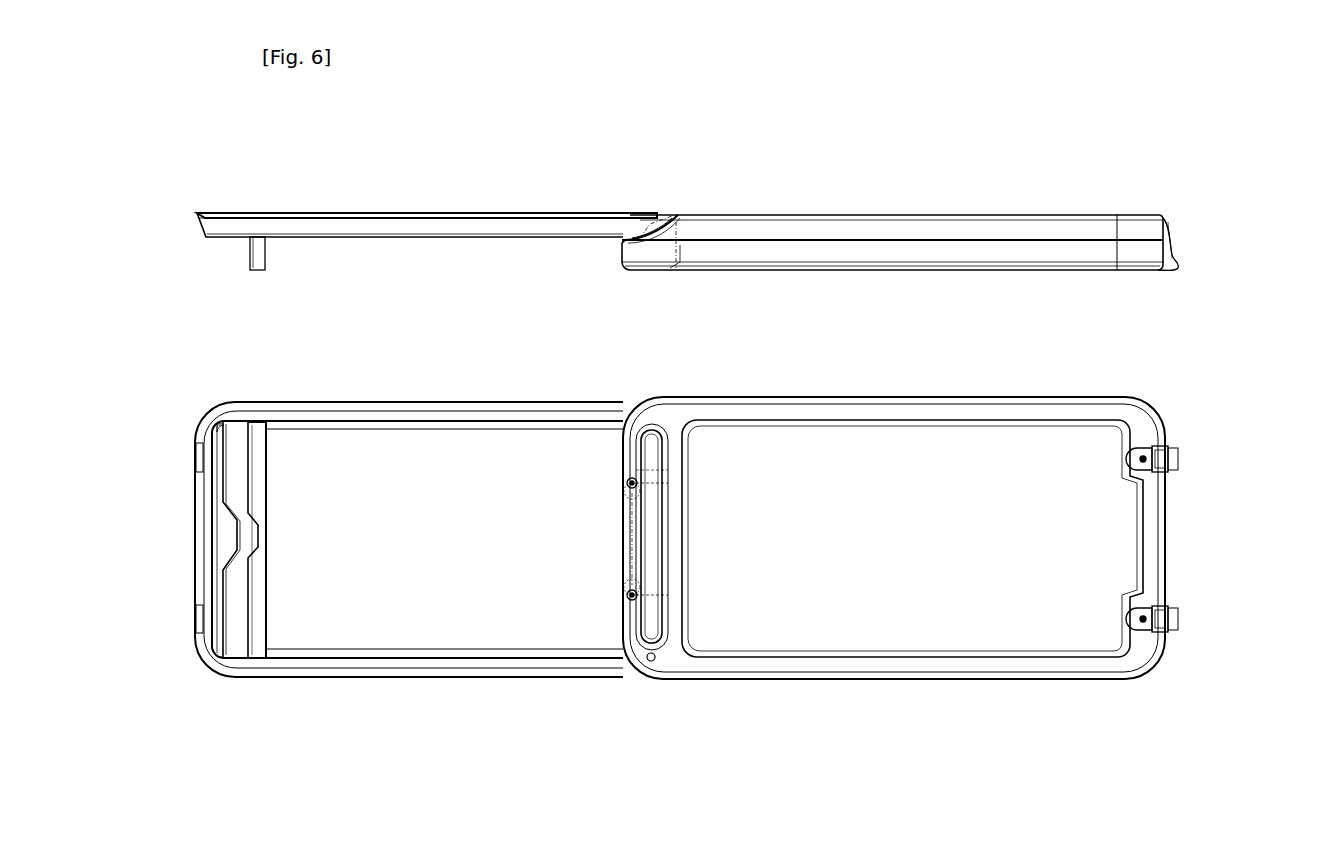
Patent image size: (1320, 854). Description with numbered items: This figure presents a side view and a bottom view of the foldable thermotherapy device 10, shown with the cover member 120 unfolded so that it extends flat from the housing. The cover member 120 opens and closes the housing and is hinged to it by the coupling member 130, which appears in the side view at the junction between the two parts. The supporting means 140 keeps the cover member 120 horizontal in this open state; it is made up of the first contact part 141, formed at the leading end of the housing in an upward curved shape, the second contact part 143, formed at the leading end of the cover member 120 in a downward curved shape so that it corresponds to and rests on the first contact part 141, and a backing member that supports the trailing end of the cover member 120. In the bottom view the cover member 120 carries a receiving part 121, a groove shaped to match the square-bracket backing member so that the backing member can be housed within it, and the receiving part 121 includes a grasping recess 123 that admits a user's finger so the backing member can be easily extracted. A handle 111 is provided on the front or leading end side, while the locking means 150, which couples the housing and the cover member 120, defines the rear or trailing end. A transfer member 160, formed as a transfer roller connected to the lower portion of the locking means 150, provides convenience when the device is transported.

The main body (case) 10 is at (986, 202).
The handle 111 is at (646, 553).
The cover member 120 is at (492, 199).
The receiving part 121 is at (226, 545).
The grasping recess 123 is at (234, 550).
The coupling member 130 is at (680, 214).
The supporting means 140 is at (913, 609).
The first contact part 141 is at (662, 235).
The second contact part 143 is at (250, 271).
The locking means 150 is at (1188, 231).
The transfer member 160 is at (1165, 448).